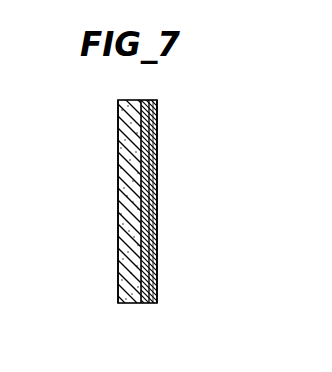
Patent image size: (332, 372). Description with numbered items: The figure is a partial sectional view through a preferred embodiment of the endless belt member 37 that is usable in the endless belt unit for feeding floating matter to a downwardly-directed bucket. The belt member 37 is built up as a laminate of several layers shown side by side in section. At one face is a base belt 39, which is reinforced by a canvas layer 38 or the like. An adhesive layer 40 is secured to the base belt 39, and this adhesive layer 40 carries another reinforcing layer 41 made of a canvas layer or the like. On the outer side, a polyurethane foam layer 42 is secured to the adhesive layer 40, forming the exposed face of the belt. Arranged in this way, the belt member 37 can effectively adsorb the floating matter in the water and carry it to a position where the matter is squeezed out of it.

The endless belt member 37 is at (102, 182).
The canvas layer 38 is at (157, 164).
The base belt 39 is at (155, 247).
The adhesive layer 40 is at (147, 303).
The reinforcing layer 41 is at (157, 182).
The polyurethane foam layer 42 is at (119, 267).